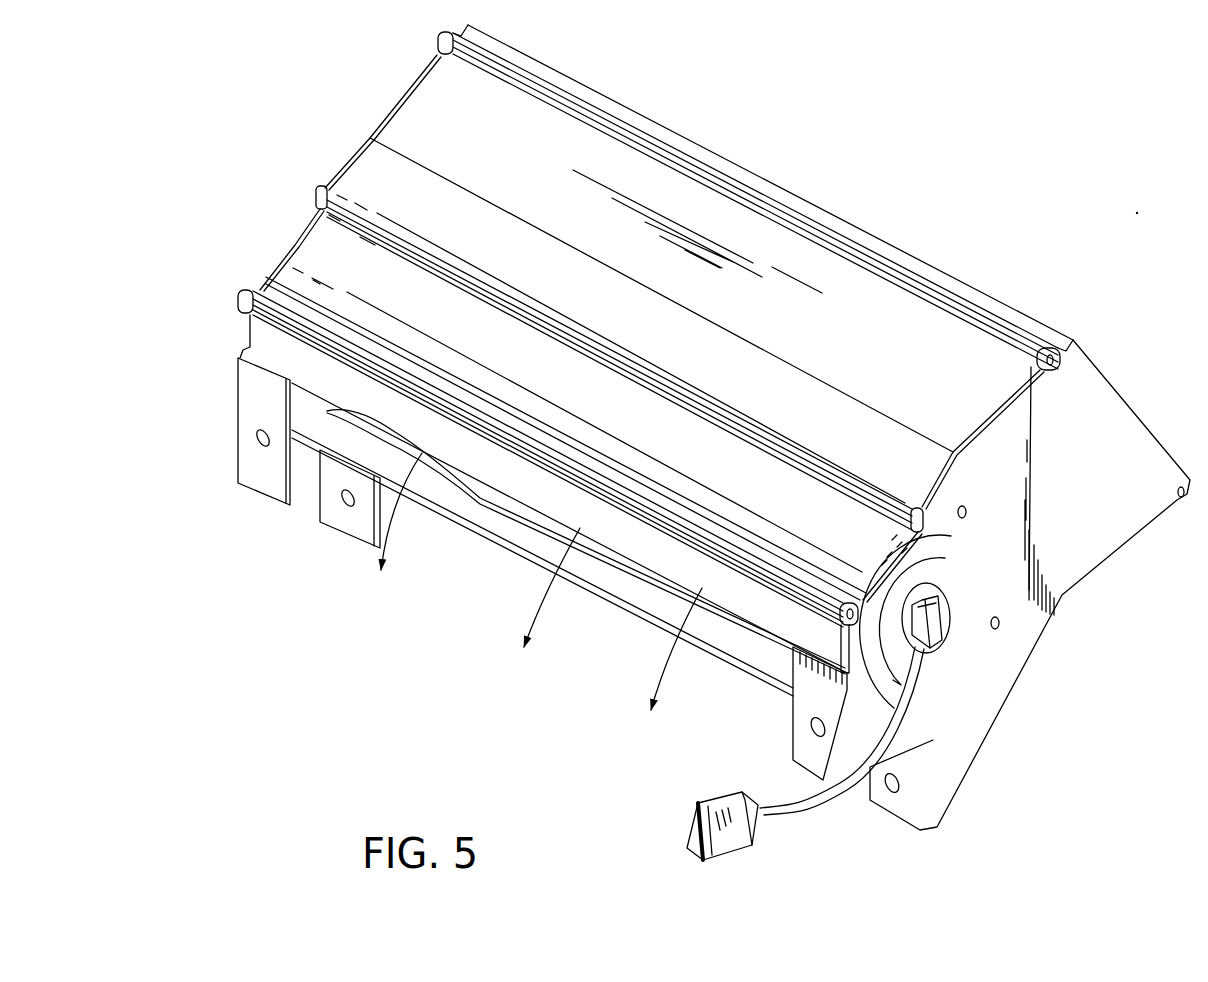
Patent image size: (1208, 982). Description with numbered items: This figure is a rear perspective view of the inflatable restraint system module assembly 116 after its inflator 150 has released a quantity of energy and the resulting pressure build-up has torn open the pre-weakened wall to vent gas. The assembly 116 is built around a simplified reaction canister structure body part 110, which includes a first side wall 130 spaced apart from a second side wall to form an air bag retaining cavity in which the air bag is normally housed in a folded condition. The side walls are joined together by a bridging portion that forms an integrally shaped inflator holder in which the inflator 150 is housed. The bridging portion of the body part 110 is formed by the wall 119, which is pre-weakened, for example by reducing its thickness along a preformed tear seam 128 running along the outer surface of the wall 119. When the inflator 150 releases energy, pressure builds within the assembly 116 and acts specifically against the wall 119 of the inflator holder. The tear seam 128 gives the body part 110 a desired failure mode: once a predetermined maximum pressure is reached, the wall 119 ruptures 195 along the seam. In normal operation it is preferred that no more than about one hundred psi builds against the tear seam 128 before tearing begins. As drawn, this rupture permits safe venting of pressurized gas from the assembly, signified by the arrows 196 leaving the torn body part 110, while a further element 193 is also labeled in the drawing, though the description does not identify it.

The reaction canister structure body part 110 is at (366, 193).
The inflatable restraint system module assembly 116 is at (806, 146).
The wall 119 is at (270, 350).
The tear seam 128 is at (330, 413).
The first side wall 130 is at (433, 108).
The inflator 150 is at (940, 597).
The electrical connector 193 is at (735, 835).
The rupture 195 is at (505, 495).
The arrows 196 is at (403, 498).